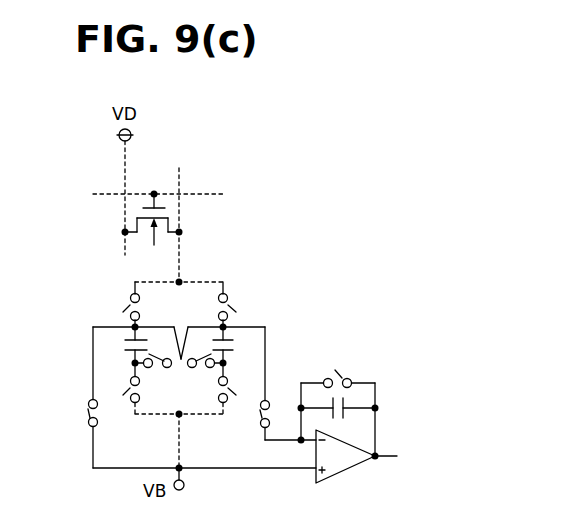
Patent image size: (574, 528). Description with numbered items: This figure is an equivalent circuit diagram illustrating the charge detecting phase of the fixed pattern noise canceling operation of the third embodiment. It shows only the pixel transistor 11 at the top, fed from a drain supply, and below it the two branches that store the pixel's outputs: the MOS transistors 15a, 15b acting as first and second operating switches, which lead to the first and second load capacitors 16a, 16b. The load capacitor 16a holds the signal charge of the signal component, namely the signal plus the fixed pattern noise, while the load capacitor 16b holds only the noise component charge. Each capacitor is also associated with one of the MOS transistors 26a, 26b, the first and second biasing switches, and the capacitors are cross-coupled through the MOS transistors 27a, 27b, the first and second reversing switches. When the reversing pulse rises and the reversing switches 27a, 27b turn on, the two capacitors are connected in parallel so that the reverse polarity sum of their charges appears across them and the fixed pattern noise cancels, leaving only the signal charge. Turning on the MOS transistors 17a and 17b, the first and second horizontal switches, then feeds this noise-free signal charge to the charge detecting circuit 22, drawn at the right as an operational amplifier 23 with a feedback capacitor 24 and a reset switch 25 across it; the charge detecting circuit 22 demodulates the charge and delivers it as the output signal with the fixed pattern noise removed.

The pixel transistor 11 is at (160, 234).
The first operating switch 15a is at (242, 303).
The second operating switch 15b is at (128, 295).
The first load capacitor 16a is at (240, 343).
The second load capacitor 16b is at (117, 345).
The first horizontal switch 17a is at (258, 412).
The second horizontal switch 17b is at (83, 413).
The charge detecting circuit 22 is at (368, 390).
The operational amplifier 23 is at (345, 460).
The feedback capacitor 24 is at (337, 437).
The reset switch 25 is at (337, 372).
The first biasing switch 26a is at (240, 388).
The second biasing switch 26b is at (115, 387).
The first reversing switch 27a is at (202, 372).
The second reversing switch 27b is at (152, 372).